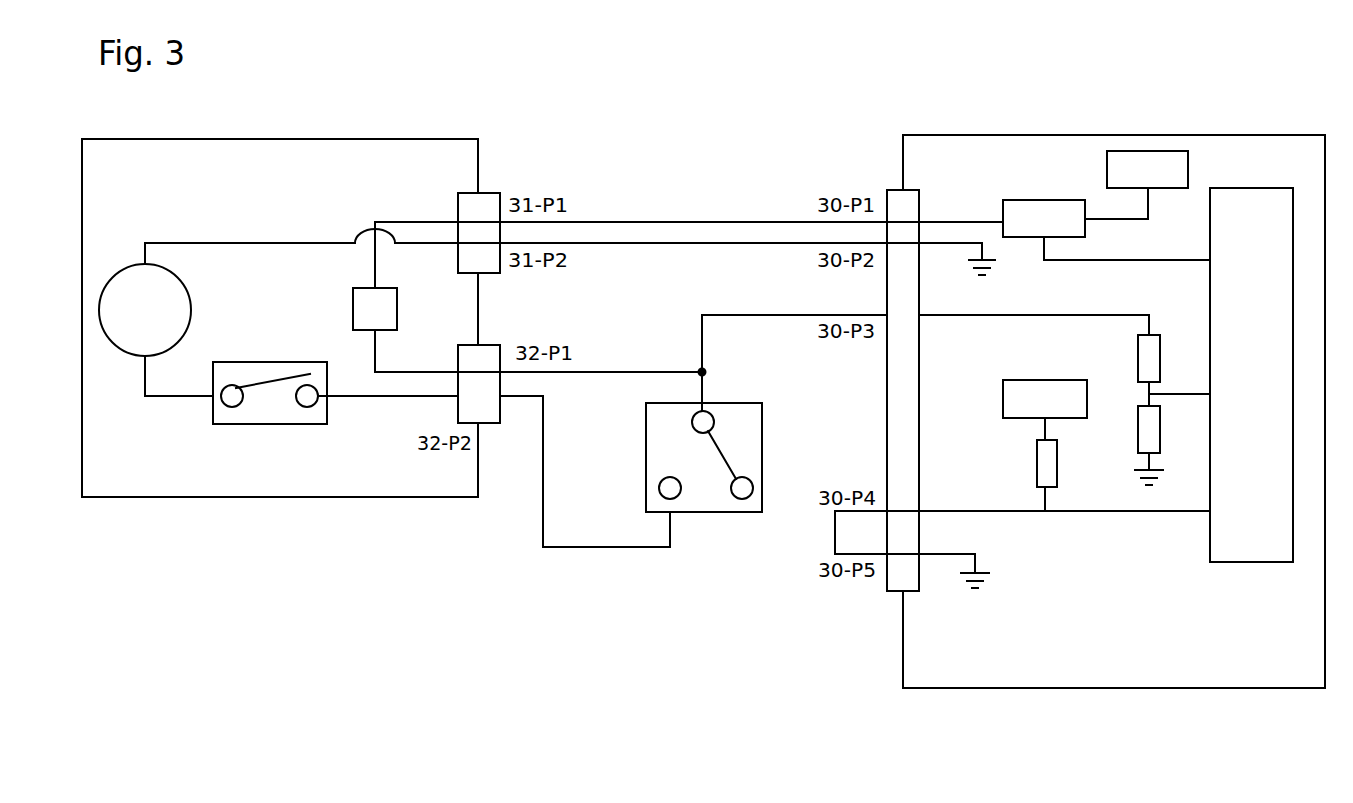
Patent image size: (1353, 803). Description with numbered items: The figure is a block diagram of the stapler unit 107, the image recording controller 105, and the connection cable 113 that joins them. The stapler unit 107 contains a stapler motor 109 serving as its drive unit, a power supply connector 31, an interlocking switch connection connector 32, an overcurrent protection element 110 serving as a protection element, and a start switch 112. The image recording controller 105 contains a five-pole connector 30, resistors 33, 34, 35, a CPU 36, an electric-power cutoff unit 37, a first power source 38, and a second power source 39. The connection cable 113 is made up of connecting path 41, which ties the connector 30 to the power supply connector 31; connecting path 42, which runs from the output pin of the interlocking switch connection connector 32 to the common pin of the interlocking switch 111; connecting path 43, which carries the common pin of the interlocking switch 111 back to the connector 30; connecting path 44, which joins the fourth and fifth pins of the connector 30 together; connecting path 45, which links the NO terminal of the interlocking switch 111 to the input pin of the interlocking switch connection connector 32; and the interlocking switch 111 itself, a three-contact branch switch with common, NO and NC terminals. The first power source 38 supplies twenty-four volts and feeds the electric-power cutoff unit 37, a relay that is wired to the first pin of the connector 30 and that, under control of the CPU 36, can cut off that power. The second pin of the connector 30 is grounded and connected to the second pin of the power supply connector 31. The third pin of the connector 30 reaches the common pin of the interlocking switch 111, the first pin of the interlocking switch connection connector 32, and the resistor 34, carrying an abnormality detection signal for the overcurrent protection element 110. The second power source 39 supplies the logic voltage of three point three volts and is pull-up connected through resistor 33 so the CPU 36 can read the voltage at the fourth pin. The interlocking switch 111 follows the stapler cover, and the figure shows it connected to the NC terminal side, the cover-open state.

The connection cable 113 is at (700, 117).
The stapler unit 107 is at (305, 139).
The stapler motor 109 is at (152, 319).
The overcurrent protection element 110 is at (385, 297).
The start switch 112 is at (257, 424).
The power supply connector 31 is at (488, 193).
The interlocking switch connection connector 32 is at (488, 345).
The connecting path 41 is at (657, 222).
The connecting path 42 is at (652, 372).
The connecting path 43 is at (733, 315).
The connecting path 44 is at (835, 532).
The connecting path 45 is at (575, 547).
The interlocking switch 111 is at (646, 422).
The connector 30 is at (897, 190).
The image recording controller 105 is at (1105, 135).
The first power source 38 is at (1165, 151).
The electric-power cutoff unit 37 is at (1106, 216).
The CPU 36 is at (1251, 360).
The second power source 39 is at (1043, 380).
The resistor 33 is at (1033, 464).
The resistor 34 is at (1136, 358).
The resistor 35 is at (1137, 445).